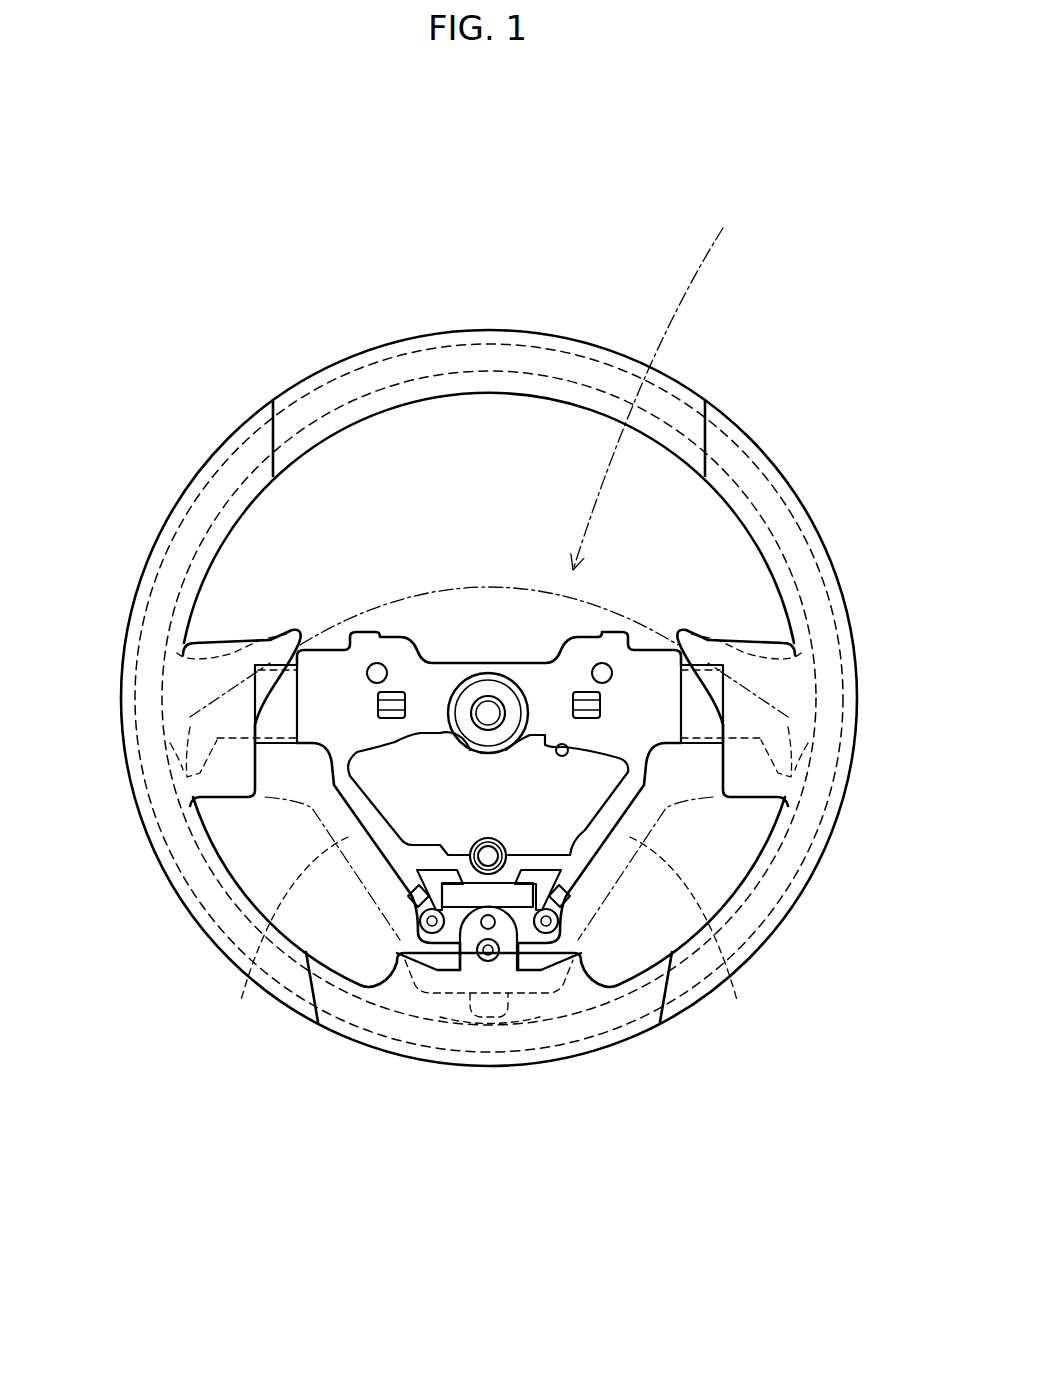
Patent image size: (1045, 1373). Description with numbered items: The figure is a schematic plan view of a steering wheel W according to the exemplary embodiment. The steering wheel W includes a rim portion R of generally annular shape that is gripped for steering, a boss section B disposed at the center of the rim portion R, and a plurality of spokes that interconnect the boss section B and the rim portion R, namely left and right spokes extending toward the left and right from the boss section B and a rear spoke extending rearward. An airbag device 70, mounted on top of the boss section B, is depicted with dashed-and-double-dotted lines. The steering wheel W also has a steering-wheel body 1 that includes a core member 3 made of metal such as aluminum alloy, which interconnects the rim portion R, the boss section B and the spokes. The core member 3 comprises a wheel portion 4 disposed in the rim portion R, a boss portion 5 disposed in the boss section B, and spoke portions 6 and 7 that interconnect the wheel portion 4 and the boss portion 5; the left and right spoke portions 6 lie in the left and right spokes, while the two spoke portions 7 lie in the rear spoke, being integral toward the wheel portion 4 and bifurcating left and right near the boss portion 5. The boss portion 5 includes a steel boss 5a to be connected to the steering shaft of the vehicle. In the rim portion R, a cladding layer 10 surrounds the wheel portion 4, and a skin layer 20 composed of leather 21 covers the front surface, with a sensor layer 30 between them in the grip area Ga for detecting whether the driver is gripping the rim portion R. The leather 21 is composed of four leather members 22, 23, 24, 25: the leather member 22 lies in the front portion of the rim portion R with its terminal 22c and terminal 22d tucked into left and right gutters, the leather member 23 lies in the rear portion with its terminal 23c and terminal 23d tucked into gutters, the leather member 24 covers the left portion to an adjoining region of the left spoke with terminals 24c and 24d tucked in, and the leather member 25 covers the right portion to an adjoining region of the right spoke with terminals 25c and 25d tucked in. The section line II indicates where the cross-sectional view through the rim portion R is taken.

The steering-wheel body 1 is at (604, 332).
The core member 3 is at (484, 720).
The wheel portion 4 is at (200, 517).
The boss portion 5 is at (553, 685).
The boss 5a is at (487, 700).
The spoke portions 6 is at (183, 703).
The spoke portions 7 is at (234, 814).
The cladding layer 10 is at (357, 383).
The skin layer 20 is at (430, 362).
The leather 21 is at (489, 711).
The leather member 22 is at (489, 329).
The terminal 22c is at (281, 425).
The terminal 22d is at (693, 442).
The leather member 23 is at (487, 1064).
The terminal 23c is at (352, 957).
The terminal 23d is at (622, 1000).
The leather member 24 is at (140, 817).
The terminal 24c is at (285, 412).
The terminal 24d is at (300, 1012).
The leather member 25 is at (847, 758).
The terminal 25c is at (723, 432).
The terminal 25d is at (690, 1012).
The sensor layer 30 is at (754, 449).
The airbag device 70 is at (660, 381).
The rim portion R is at (257, 332).
The grip area Ga is at (243, 459).
The boss section B is at (445, 564).
The steering wheel W is at (757, 195).
The section line II is at (576, 310).